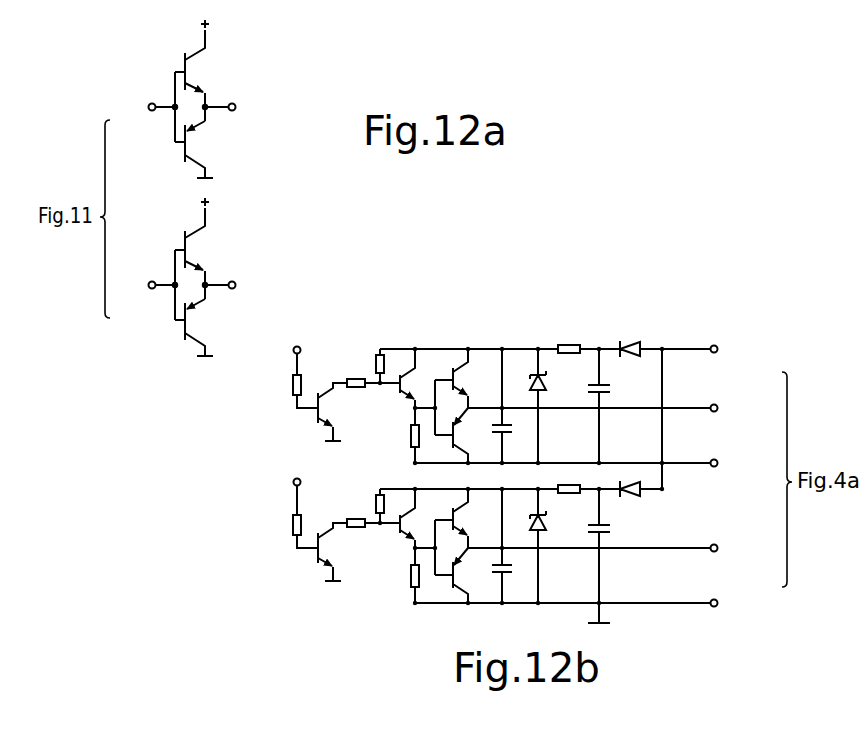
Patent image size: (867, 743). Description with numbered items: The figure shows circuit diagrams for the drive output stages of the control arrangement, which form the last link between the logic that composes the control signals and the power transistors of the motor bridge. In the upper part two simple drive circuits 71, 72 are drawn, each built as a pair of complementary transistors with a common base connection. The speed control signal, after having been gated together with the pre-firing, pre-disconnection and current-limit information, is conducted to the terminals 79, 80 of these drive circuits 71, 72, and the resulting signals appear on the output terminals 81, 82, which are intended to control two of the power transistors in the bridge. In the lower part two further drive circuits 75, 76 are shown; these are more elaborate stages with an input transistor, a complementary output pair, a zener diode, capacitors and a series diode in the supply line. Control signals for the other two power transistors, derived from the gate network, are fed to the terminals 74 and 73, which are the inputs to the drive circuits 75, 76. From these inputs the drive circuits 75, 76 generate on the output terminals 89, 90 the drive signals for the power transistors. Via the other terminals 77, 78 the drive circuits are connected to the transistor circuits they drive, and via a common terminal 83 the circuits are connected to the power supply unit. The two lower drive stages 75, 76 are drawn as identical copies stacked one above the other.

In FIG. 12A, the drive circuit 71 is at (210, 71).
In FIG. 12A, the drive circuit 72 is at (214, 230).
In FIG. 12A, the terminal 79 is at (148, 110).
In FIG. 12A, the terminal 80 is at (148, 288).
In FIG. 12A, the output terminal 81 is at (236, 104).
In FIG. 12A, the output terminal of second stage 82 is at (236, 281).
In FIG. 12B, the terminal 73 is at (300, 346).
In FIG. 12B, the terminal 74 is at (293, 478).
In FIG. 12B, the drive circuit 75 is at (521, 346).
In FIG. 12B, the drive circuit 76 is at (429, 608).
In FIG. 12B, the terminal 77 is at (718, 460).
In FIG. 12B, the terminal 78 is at (718, 600).
In FIG. 12B, the terminal 83 is at (718, 346).
In FIG. 12B, the output terminal 89 is at (718, 404).
In FIG. 12B, the output terminal 90 is at (718, 544).